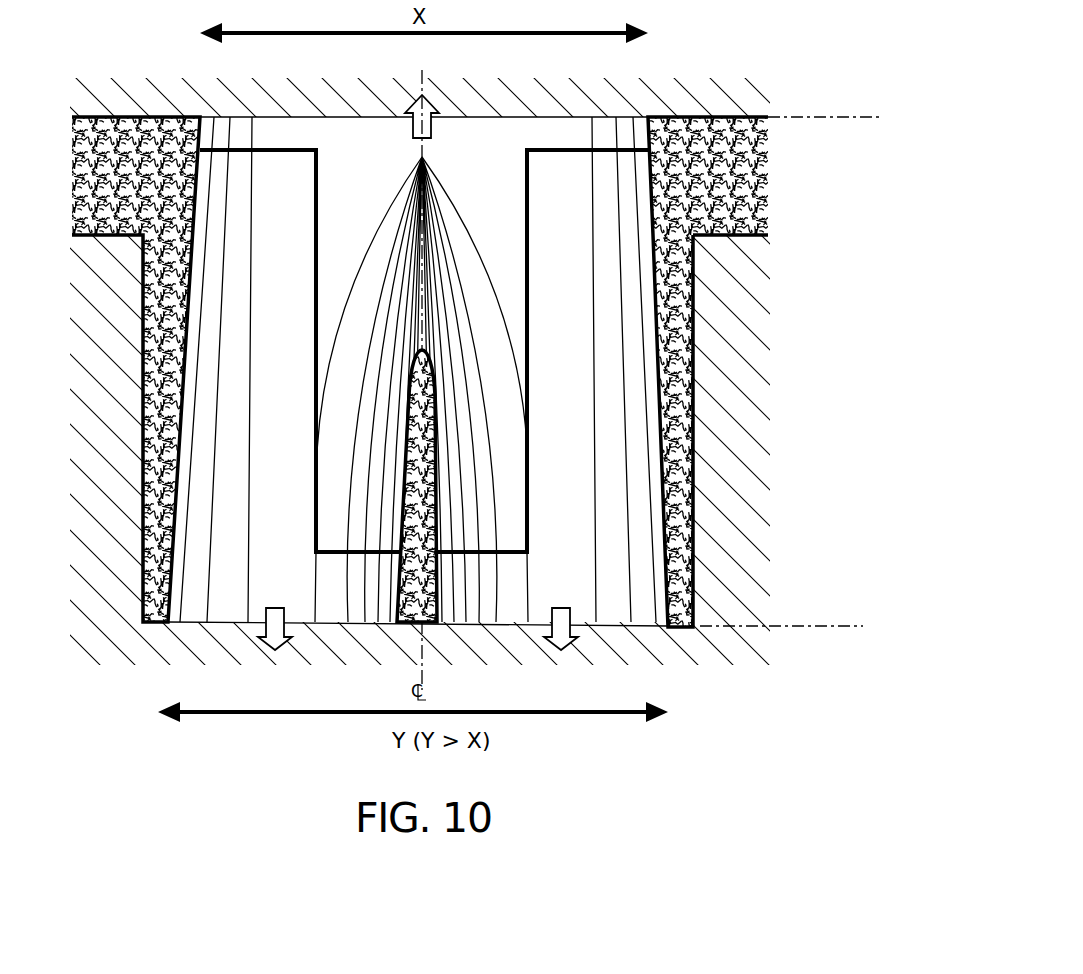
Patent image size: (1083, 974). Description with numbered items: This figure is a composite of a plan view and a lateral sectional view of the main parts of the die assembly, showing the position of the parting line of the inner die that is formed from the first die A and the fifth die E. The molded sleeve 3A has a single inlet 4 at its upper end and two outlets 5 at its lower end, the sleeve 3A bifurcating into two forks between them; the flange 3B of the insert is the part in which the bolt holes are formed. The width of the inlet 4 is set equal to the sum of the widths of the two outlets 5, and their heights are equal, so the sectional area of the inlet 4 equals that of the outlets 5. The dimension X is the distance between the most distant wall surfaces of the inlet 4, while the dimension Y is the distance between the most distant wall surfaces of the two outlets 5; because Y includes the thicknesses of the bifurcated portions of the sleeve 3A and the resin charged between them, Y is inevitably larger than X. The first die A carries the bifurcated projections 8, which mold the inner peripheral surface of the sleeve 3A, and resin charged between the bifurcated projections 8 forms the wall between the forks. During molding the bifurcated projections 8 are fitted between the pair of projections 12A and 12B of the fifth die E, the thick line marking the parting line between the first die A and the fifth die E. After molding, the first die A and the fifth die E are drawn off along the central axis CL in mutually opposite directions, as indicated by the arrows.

The sleeve 3A is at (680, 348).
The flange 3B is at (740, 177).
The projection of the fifth die 12A is at (200, 410).
The projection of the fifth die 12B is at (633, 397).
The bifurcated projections 8 is at (497, 190).
The inlet 4 is at (847, 96).
The outlets 5 is at (810, 604).
The first die A is at (357, 123).
The fifth die E is at (330, 610).